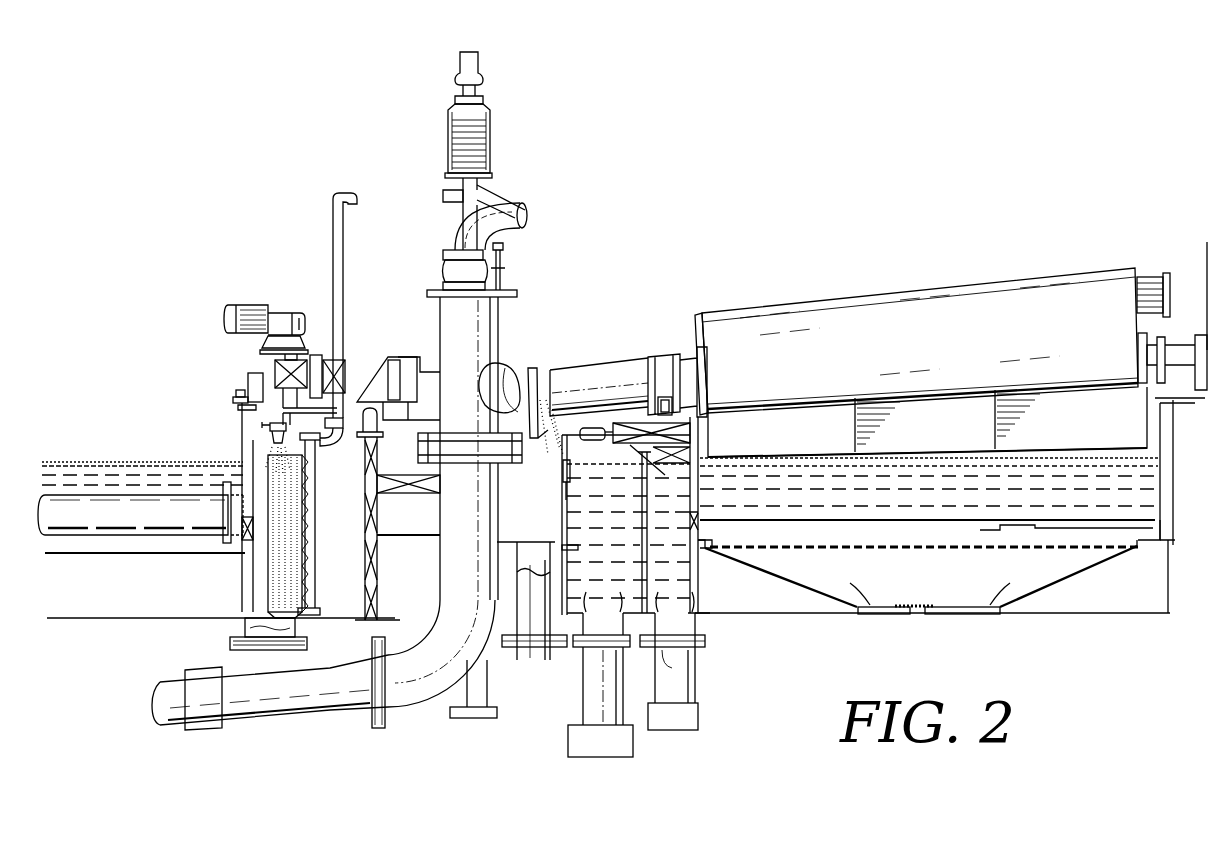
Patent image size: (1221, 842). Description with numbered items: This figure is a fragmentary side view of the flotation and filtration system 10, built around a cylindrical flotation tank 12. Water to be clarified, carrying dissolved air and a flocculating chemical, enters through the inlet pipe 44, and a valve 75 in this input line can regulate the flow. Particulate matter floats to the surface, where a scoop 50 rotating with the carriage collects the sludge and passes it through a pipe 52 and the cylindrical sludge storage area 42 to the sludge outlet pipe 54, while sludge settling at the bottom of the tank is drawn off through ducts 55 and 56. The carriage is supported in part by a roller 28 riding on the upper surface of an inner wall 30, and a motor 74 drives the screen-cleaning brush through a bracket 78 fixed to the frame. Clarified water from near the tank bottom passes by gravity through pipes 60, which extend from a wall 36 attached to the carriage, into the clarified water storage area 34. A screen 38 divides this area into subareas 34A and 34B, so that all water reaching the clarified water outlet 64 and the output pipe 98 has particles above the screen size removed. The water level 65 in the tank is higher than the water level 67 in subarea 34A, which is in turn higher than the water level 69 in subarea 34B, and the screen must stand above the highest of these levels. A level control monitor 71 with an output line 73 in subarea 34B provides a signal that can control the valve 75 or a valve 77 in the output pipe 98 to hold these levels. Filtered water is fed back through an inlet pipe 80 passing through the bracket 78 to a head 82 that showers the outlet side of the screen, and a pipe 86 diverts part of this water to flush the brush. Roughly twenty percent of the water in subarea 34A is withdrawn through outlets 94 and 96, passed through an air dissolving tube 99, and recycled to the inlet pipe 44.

The apparatus 10 is at (758, 193).
The cylindrical flotation tank 12 is at (62, 478).
The roller 28 is at (378, 425).
The inner wall 30 is at (380, 460).
The clarified water storage area 34 is at (630, 450).
The subarea 34A is at (663, 532).
The subarea 34B is at (618, 536).
The wall 36 is at (700, 488).
The screen 38 is at (690, 548).
The cylindrical sludge storage area 42 is at (540, 456).
The inlet pipe 44 is at (478, 529).
The scoop 50 is at (880, 298).
The pipe 52 is at (598, 365).
The sludge outlet pipe 54 is at (523, 620).
The duct 55 is at (870, 618).
The duct 56 is at (985, 618).
The pipe 60 is at (112, 500).
The clarified water outlet 64 is at (583, 660).
The water level 65 is at (1168, 445).
The water level 67 is at (690, 440).
The water level 69 is at (568, 470).
The level control monitor 71 is at (563, 462).
The output line 73 is at (562, 510).
The motor 74 is at (255, 305).
The valve 75 is at (214, 725).
The valve 77 is at (568, 742).
The bracket 78 is at (275, 368).
The inlet pipe 80 is at (343, 250).
The head 82 is at (318, 460).
The pipe 86 is at (270, 435).
The outlet 94 is at (307, 643).
The outlet 96 is at (695, 664).
The output pipe 98 is at (623, 660).
The air dissolving tube 99 is at (698, 717).